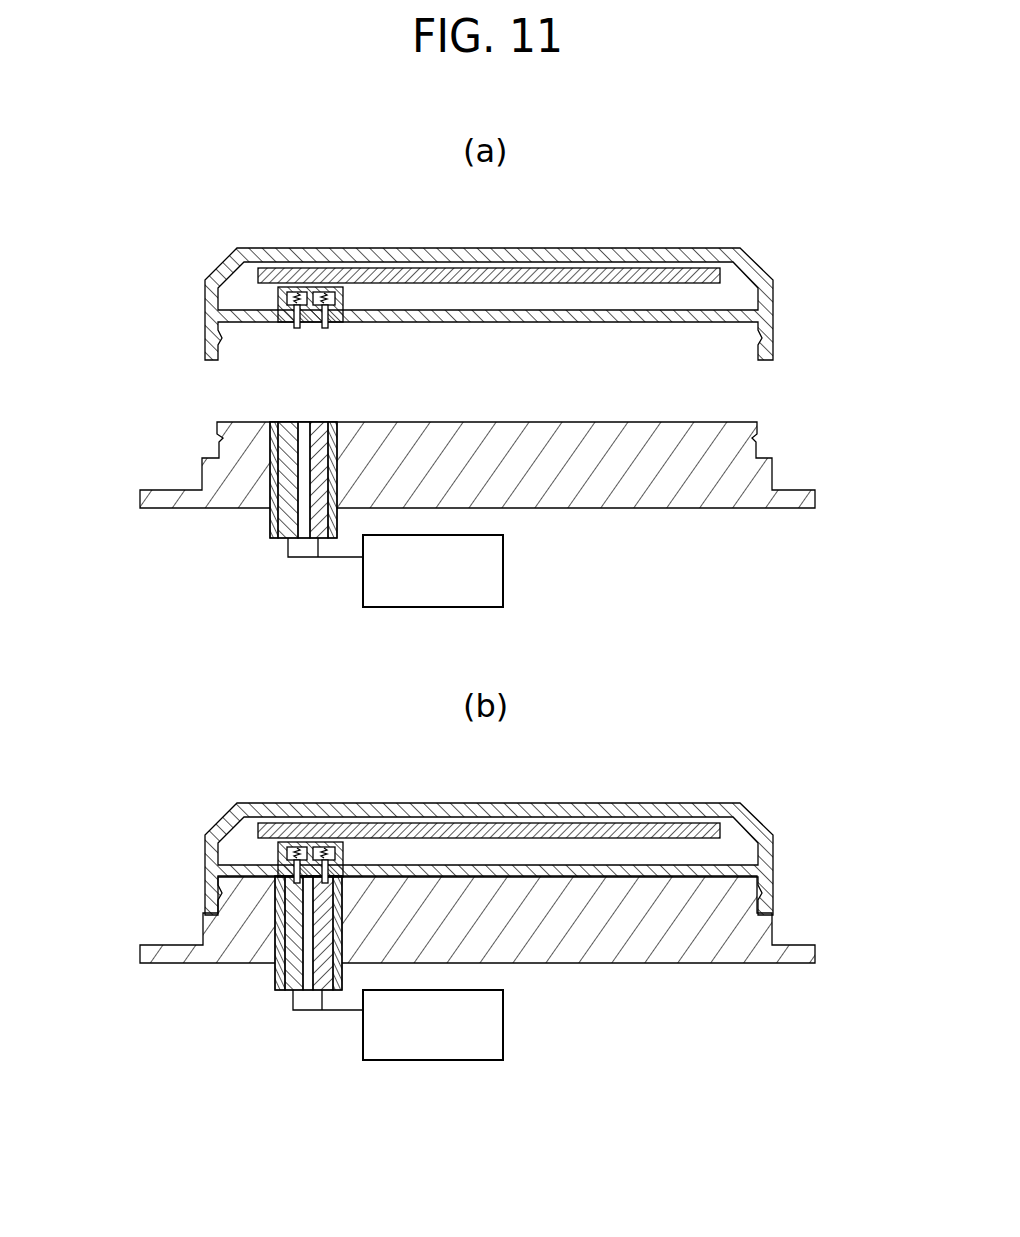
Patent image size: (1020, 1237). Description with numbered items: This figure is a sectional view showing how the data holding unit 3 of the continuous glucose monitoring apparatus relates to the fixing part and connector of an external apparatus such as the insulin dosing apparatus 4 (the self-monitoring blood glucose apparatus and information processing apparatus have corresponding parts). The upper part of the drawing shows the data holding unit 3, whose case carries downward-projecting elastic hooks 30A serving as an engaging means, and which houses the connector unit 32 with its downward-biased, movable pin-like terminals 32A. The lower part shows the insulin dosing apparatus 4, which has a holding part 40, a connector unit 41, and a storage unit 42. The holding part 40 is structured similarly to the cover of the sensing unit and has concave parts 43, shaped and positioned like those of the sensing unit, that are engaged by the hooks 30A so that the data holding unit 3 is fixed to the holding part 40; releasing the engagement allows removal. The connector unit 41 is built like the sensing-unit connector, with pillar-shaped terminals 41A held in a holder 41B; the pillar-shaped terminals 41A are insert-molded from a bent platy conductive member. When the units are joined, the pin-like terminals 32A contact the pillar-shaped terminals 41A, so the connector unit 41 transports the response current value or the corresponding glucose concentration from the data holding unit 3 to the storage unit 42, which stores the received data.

The data holding unit 3 is at (481, 602).
The hook 30A is at (207, 350).
The connector unit 32 is at (332, 608).
The pin-like terminal 32A is at (326, 329).
The insulin dosing apparatus 4 is at (772, 462).
The holding part 40 is at (557, 445).
The connector unit 41 is at (311, 723).
The pillar-shaped terminal 41A is at (322, 482).
The holder 41B is at (426, 463).
The storage unit 42 is at (505, 565).
The concave part 43 is at (217, 442).